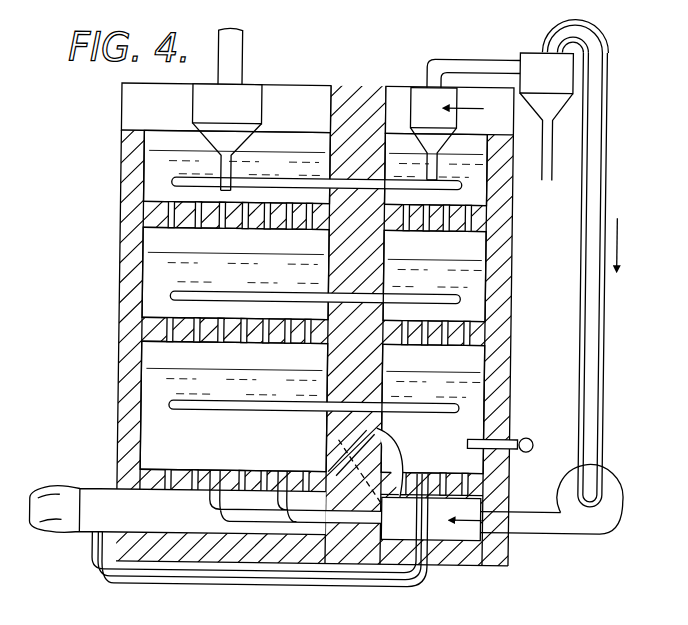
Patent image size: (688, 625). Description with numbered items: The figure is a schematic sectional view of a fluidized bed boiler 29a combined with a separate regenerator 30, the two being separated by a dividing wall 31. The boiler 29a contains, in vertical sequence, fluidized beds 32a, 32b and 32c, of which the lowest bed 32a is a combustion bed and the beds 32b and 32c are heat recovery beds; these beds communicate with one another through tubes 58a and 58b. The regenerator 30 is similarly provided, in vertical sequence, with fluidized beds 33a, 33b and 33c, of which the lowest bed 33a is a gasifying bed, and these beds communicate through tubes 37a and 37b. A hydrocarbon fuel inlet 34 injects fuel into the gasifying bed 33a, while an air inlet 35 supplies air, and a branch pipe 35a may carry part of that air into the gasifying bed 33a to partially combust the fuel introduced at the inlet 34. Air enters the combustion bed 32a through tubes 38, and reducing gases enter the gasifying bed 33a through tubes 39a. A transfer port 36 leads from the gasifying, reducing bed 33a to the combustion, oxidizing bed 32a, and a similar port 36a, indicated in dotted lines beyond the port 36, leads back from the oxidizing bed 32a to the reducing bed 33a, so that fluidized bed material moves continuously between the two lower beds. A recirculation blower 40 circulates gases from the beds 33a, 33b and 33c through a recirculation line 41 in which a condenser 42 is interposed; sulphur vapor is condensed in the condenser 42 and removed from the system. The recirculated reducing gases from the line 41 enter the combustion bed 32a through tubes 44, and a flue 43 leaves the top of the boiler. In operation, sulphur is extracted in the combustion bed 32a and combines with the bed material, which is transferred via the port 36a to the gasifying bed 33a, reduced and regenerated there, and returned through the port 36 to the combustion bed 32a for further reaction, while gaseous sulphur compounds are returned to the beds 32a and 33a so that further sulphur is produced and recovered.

The fluidized bed boiler 29a is at (122, 92).
The regenerator 30 is at (514, 280).
The dividing wall 31 is at (346, 105).
The combustion bed 32a is at (154, 382).
The heat recovery bed 32b is at (157, 266).
The heat recovery bed 32c is at (151, 184).
The gasifying bed 33a is at (474, 388).
The fluidized bed 33b is at (452, 264).
The fluidized bed 33c is at (394, 167).
The hydrocarbon fuel inlet 34 is at (534, 435).
The air inlet 35 is at (70, 521).
The branch pipe 35a is at (254, 547).
The transfer port 36 is at (431, 518).
The port 36a is at (337, 438).
The communication tube 37a is at (473, 326).
The communication tube 37b is at (472, 216).
The air tubes 38 is at (165, 469).
The reducing gas tubes 39a is at (475, 482).
The recirculation blower 40 is at (601, 510).
The recirculation line 41 is at (611, 306).
The condenser 42 is at (530, 57).
The flue 43 is at (227, 49).
The tubes 44 is at (306, 530).
The communication tube 58a is at (160, 324).
The communication tube 58b is at (167, 212).